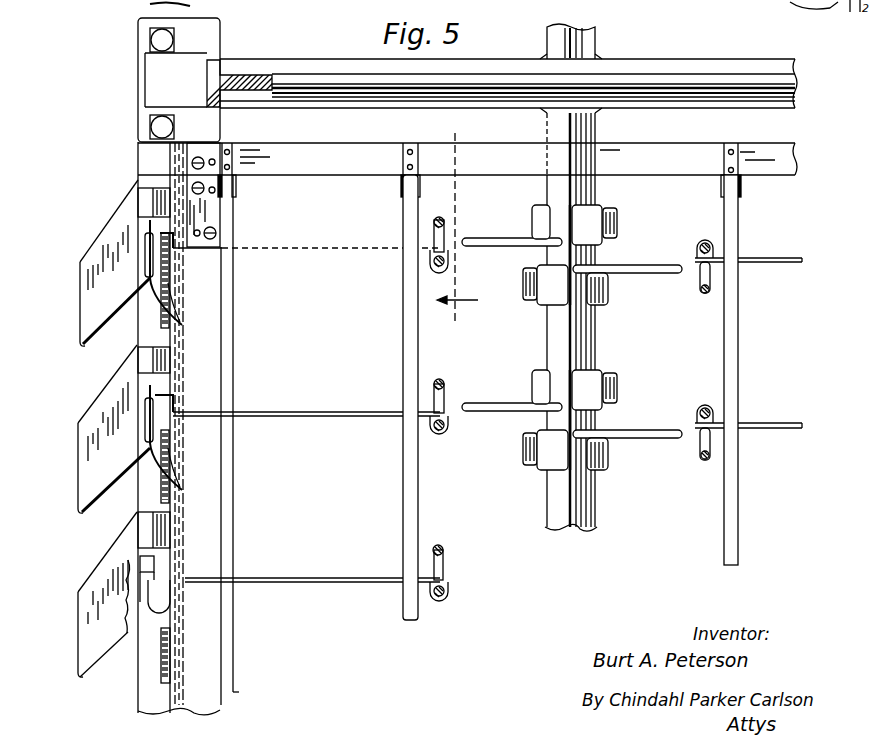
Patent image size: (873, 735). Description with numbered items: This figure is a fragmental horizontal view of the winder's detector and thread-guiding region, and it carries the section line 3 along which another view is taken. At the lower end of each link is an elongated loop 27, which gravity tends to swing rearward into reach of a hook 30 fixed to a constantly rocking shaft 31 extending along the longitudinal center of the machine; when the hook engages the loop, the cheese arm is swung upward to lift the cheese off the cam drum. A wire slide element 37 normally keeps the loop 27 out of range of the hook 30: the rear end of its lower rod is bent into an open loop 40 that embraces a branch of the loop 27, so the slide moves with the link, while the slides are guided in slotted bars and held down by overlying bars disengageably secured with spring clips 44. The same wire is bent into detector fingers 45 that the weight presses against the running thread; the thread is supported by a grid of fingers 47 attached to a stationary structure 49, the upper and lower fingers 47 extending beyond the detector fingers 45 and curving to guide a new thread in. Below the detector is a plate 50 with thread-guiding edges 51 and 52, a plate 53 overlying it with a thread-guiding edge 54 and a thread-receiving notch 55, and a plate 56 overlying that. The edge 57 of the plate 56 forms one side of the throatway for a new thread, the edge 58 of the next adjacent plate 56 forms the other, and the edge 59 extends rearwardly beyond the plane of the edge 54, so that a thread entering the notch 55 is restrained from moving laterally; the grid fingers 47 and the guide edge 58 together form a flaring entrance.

The line 3— 3 is at (455, 224).
The elongated loop 27 is at (443, 230).
The hook 30 is at (502, 247).
The rocking shaft 31 is at (592, 337).
The slide element 37 is at (487, 405).
The open loop 40 is at (440, 434).
The spring clips 44 is at (236, 193).
The detector fingers 45 is at (147, 263).
The grid fingers 47 is at (158, 231).
The stationary structure 49 is at (146, 187).
The plate 50 is at (166, 330).
The thread-guiding edge 51 is at (138, 345).
The thread-guiding edge 52 is at (147, 312).
The plate 53 is at (166, 433).
The thread-guiding edge 54 is at (148, 598).
The thread-receiving notch 55 is at (152, 578).
The plate 56 is at (85, 292).
The edge 57 is at (103, 392).
The edge 58 is at (343, 412).
The edge 59 is at (157, 423).